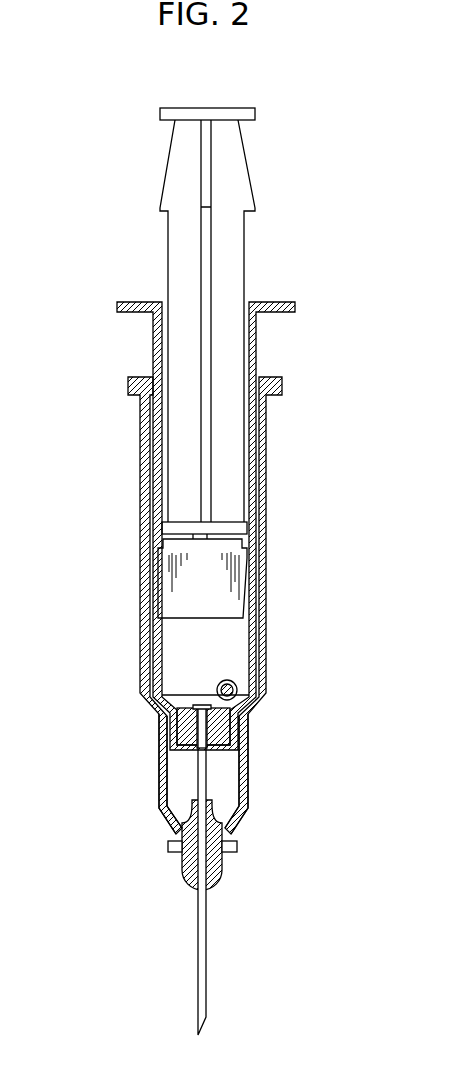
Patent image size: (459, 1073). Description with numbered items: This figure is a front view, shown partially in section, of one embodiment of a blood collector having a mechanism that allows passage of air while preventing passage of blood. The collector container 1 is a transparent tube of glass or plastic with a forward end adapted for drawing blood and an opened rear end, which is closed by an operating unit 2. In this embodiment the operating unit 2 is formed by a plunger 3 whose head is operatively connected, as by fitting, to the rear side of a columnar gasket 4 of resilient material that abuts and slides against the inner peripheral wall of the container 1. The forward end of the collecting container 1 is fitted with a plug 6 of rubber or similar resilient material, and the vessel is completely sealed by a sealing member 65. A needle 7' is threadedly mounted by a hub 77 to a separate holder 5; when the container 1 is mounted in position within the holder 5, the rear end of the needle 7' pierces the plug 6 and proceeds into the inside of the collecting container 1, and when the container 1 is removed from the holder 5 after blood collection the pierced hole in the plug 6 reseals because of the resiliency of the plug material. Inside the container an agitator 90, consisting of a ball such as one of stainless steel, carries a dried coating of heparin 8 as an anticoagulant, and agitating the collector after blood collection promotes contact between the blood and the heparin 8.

The collector container 1 is at (252, 357).
The operating unit 2 is at (268, 252).
The plunger 3 is at (237, 281).
The columnar gasket 4 is at (228, 593).
The holder 5 is at (264, 433).
The plug 6 is at (170, 743).
The heparin 8 is at (237, 696).
The agitator 90 is at (237, 688).
The sealing member 65 is at (163, 785).
The hub 77 is at (180, 873).
The needle 7' is at (139, 872).